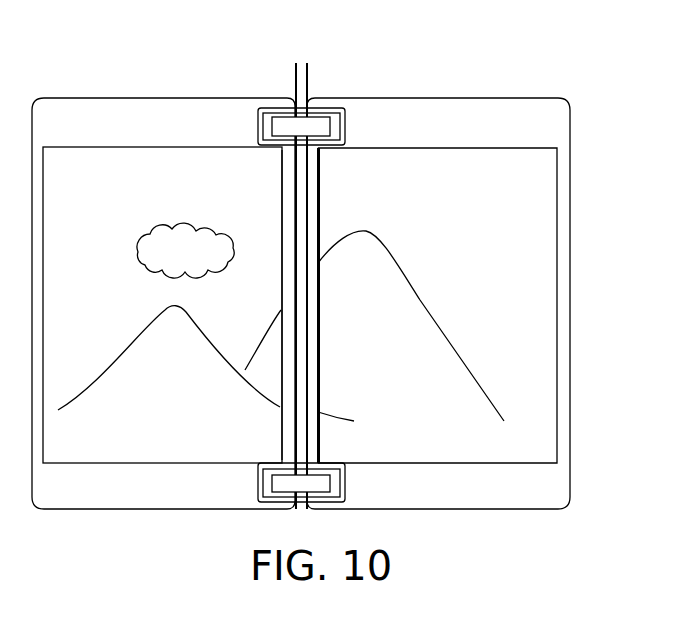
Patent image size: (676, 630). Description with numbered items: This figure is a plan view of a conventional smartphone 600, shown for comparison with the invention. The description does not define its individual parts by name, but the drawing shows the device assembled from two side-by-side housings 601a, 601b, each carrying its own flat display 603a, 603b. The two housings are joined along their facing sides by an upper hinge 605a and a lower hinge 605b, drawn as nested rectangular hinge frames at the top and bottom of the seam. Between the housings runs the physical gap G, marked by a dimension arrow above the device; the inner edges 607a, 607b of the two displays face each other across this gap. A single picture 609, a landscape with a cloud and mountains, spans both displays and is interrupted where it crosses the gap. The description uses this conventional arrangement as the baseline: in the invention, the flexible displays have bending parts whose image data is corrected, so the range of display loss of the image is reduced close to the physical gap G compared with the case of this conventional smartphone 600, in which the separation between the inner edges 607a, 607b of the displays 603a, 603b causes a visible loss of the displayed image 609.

The dual-display electronic device 600 is at (538, 76).
The first housing 601a is at (453, 79).
The second housing 601b is at (143, 79).
The first display 603a is at (403, 131).
The second display 603b is at (160, 131).
The upper hinge 605a is at (330, 148).
The lower hinge 605b is at (312, 483).
The first display inner edge 607a is at (320, 226).
The second display inner edge 607b is at (284, 227).
The displayed image 609 is at (137, 198).
The physical gap G is at (330, 71).